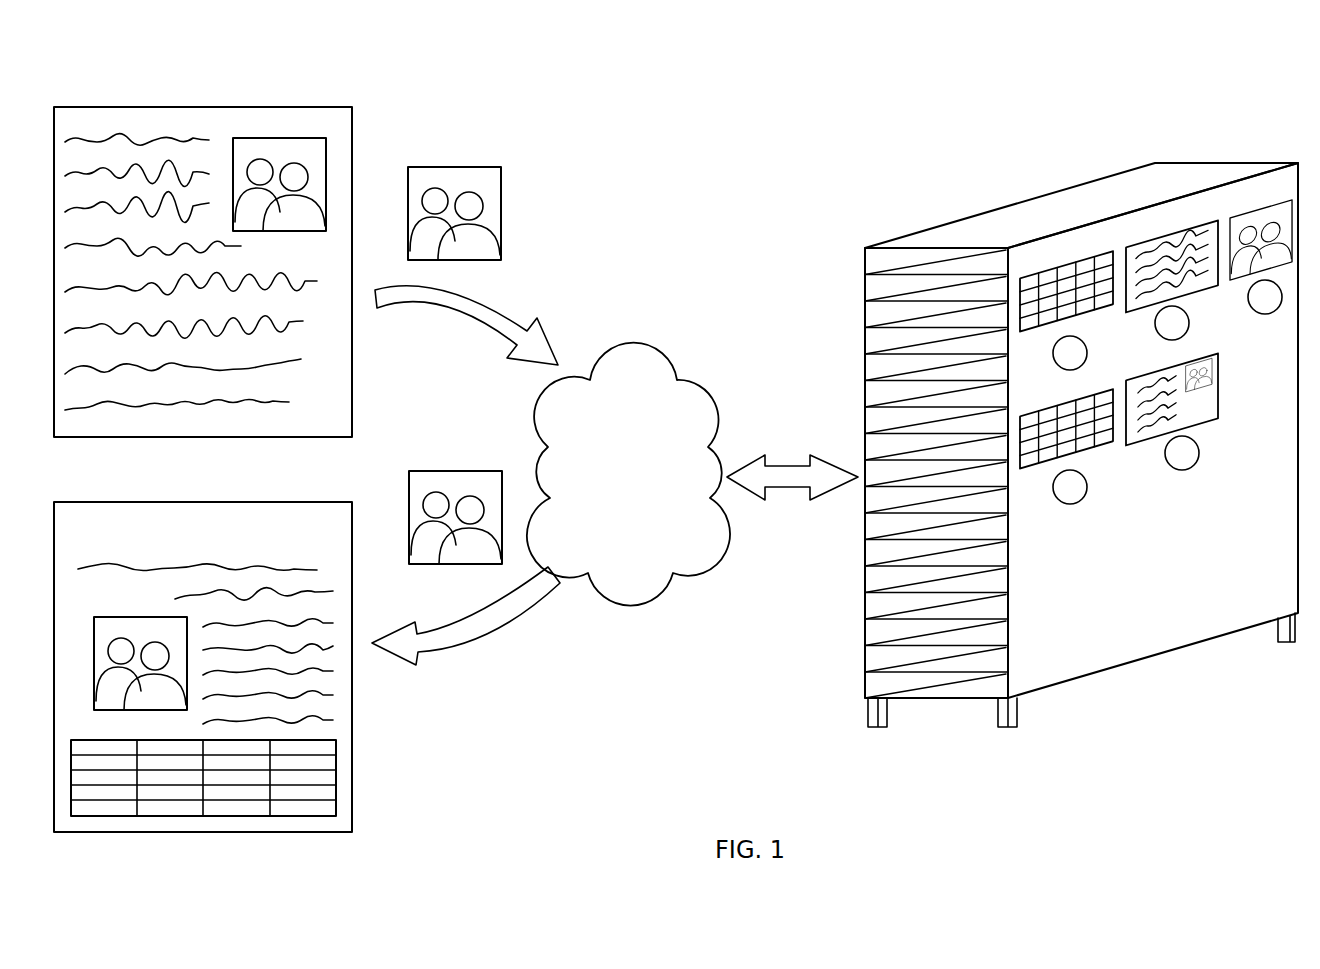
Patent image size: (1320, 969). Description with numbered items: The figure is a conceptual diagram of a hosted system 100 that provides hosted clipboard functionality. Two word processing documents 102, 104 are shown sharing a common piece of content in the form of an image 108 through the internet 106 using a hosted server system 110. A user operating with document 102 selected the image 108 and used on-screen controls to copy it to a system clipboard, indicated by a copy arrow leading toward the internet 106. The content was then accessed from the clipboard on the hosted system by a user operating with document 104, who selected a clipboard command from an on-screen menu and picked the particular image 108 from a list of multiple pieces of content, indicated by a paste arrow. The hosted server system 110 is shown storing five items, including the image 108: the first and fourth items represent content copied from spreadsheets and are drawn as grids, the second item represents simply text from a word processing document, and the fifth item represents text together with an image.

The hosted system 100 is at (131, 56).
The word processing document 102 is at (115, 107).
The word processing document 104 is at (115, 502).
The internet 106 is at (635, 333).
The image 108 is at (295, 138).
The hosted server system 110 is at (1098, 676).